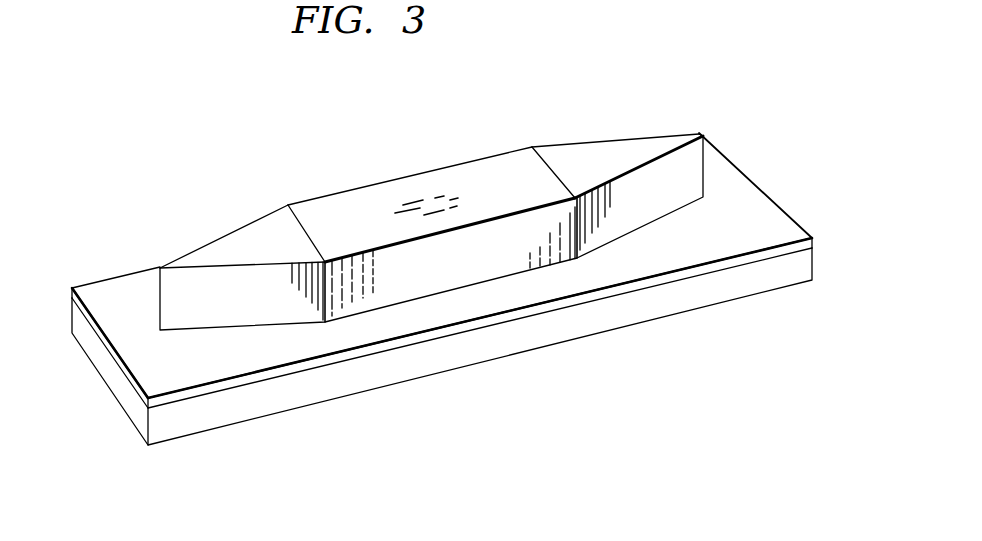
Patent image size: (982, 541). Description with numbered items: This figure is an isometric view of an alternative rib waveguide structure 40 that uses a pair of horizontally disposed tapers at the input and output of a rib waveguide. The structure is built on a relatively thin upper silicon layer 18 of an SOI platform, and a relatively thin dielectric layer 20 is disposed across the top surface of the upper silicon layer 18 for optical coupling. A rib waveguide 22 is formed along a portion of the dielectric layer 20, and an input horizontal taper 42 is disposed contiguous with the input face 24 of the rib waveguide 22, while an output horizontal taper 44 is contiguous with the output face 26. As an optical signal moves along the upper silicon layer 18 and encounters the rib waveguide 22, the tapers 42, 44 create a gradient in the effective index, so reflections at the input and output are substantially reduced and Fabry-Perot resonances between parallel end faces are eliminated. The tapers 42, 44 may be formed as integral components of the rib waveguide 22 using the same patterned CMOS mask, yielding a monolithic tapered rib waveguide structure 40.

The rib waveguide structure 40 is at (449, 282).
The upper silicon layer 18 is at (802, 267).
The dielectric layer 20 is at (752, 210).
The rib waveguide 22 is at (423, 190).
The input face 24 is at (300, 227).
The output face 26 is at (552, 167).
The input horizontal taper 42 is at (227, 250).
The output horizontal taper 44 is at (632, 157).